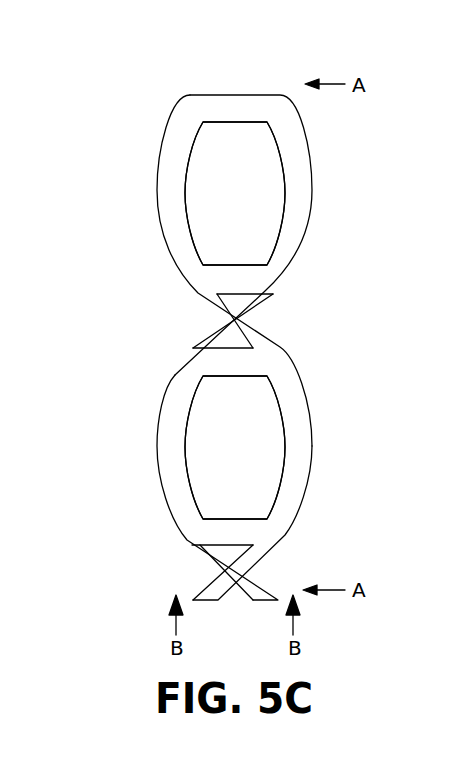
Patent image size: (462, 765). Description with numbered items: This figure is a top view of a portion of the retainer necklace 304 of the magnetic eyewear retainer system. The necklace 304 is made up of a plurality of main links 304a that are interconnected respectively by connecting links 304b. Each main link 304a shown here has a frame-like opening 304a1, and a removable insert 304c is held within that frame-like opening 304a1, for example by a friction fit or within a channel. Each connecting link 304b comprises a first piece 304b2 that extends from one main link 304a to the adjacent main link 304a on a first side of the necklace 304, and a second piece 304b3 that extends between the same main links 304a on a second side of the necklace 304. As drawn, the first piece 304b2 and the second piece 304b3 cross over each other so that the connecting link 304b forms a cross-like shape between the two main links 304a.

The retainer necklace 304 is at (235, 333).
The main link 304a is at (342, 176).
The frame-like opening 304a1 is at (185, 201).
The connecting link 304b is at (240, 435).
The first piece 304b2 is at (225, 313).
The second piece 304b3 is at (220, 331).
The removable insert 304c is at (260, 206).